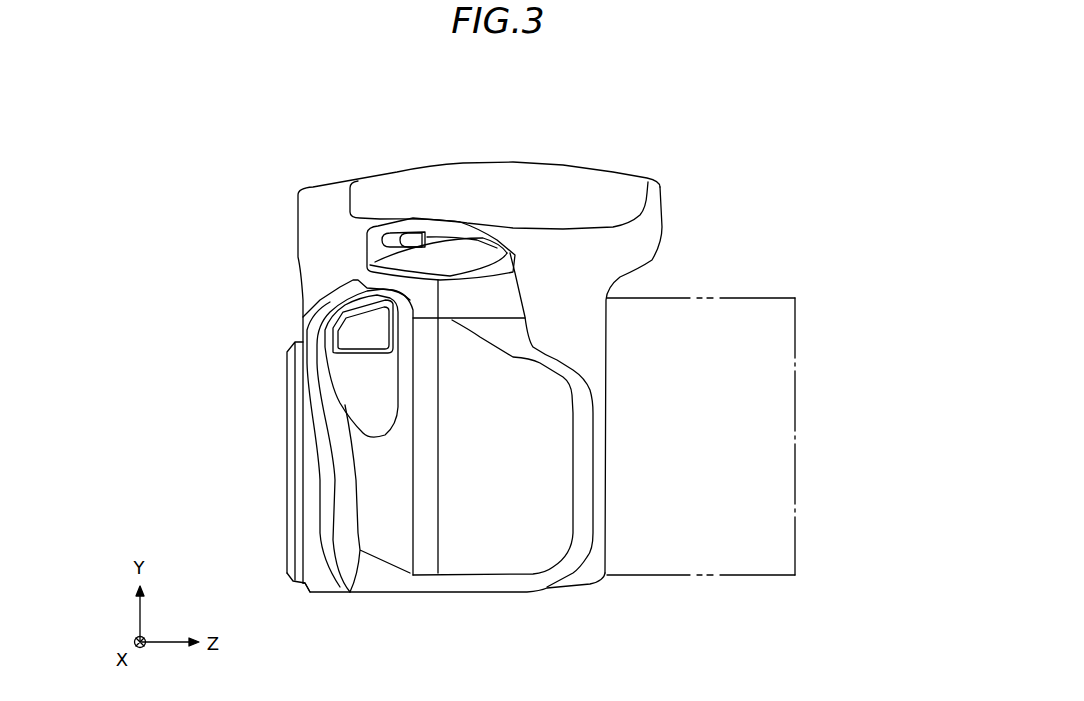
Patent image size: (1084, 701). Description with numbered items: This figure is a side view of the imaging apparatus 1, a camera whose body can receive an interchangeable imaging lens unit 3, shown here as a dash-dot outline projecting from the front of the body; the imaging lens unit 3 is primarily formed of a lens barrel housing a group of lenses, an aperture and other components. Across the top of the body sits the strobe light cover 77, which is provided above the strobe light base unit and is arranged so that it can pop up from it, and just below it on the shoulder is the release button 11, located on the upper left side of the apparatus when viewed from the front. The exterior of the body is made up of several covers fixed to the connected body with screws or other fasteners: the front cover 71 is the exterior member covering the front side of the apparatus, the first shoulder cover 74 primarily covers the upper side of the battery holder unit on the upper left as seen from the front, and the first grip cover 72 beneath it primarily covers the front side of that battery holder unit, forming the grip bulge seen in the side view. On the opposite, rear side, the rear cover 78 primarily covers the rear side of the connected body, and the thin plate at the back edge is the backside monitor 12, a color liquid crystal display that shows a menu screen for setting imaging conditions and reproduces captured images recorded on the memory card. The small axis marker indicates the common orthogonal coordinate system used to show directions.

The imaging apparatus 1 is at (761, 86).
The imaging lens unit 3 is at (795, 442).
The release button 11 is at (452, 223).
The backside monitor 12 is at (285, 462).
The front cover 71 is at (647, 237).
The first grip cover 72 is at (488, 562).
The first shoulder cover 74 is at (493, 297).
The strobe light cover 77 is at (543, 180).
The rear cover 78 is at (310, 580).